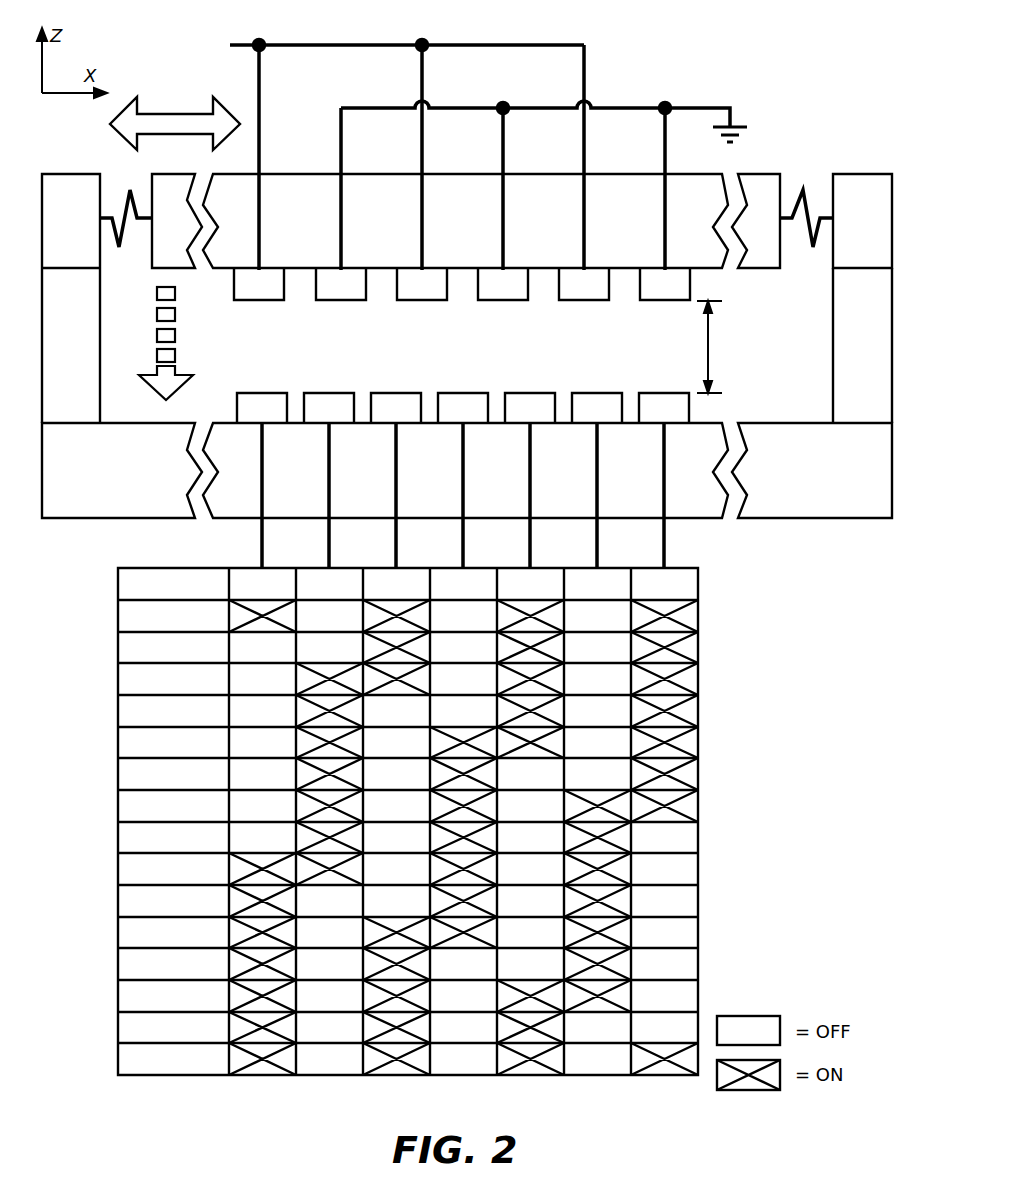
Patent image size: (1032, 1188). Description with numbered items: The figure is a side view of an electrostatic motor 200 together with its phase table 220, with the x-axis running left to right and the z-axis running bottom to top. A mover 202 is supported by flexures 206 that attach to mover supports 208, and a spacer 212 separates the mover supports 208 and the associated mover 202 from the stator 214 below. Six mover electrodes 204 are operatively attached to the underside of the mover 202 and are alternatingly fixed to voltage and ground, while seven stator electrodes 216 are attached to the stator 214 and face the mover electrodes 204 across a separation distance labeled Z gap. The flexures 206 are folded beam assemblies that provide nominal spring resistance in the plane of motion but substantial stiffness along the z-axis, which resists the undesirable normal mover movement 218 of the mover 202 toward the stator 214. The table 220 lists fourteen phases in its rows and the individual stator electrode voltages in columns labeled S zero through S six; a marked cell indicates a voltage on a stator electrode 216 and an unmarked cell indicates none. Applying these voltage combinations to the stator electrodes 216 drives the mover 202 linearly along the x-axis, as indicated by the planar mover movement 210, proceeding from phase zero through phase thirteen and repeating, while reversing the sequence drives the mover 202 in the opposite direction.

The electrostatic motor 200 is at (830, 547).
The mover 202 is at (768, 174).
The mover electrodes 204 is at (664, 302).
The flexures 206 is at (811, 249).
The mover supports 208 is at (853, 174).
The planar mover movement 210 is at (193, 113).
The spacer 212 is at (833, 352).
The stator 214 is at (814, 423).
The stator electrodes 216 is at (597, 393).
The normal mover movement 218 is at (177, 357).
The table 220 is at (119, 568).